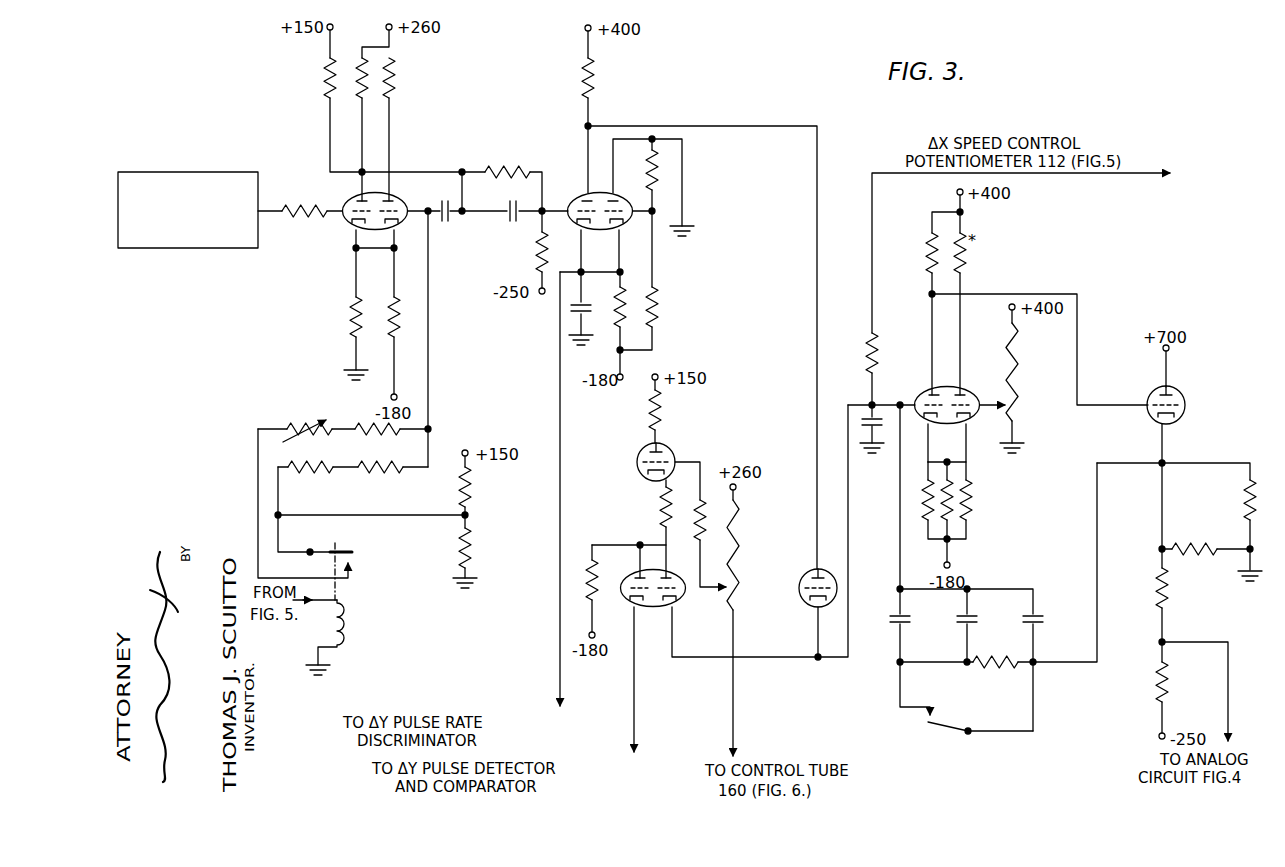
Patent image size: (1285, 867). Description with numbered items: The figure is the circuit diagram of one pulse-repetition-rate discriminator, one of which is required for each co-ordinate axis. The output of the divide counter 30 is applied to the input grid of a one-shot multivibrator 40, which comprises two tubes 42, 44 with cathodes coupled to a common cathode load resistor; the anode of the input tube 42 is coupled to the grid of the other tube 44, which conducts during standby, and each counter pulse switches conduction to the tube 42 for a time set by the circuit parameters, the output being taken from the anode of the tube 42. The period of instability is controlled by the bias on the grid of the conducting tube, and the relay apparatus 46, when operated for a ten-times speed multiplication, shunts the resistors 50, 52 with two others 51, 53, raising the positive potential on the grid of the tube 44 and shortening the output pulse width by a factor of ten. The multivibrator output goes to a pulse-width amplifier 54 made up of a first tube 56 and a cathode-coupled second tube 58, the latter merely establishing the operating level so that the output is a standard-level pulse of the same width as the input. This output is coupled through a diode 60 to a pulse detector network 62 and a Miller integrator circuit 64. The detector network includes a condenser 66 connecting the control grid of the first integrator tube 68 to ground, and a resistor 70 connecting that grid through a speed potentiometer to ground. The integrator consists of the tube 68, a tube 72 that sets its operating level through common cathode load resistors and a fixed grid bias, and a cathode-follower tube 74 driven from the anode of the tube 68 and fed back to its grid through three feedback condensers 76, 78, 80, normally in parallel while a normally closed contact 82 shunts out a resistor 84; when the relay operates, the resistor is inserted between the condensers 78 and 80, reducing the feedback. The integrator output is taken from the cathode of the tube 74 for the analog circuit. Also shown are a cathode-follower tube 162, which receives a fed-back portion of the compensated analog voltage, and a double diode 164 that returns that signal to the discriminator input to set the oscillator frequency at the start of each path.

The divide counter 30 is at (183, 242).
The one-shot multivibrator 40 is at (345, 228).
The input tube of the multivibrator 42 is at (352, 196).
The second tube of the multivibrator 44 is at (405, 207).
The relay apparatus 46 is at (345, 628).
The resistor 50 is at (305, 466).
The resistor 51 is at (298, 420).
The resistor 52 is at (377, 466).
The resistor 53 is at (362, 428).
The pulse-width amplifier 54 is at (571, 194).
The first tube of the pulse-width amplifier 56 is at (574, 228).
The second tube of the pulse-width amplifier 58 is at (628, 226).
The diode 60 is at (806, 601).
The pulse detector network 62 is at (863, 411).
The Miller integrator circuit 64 is at (922, 384).
The condenser 66 is at (868, 430).
The first tube of the Miller integrator 68 is at (917, 398).
The resistor 70 is at (869, 349).
The tube 72 is at (967, 393).
The cathode-follower tube 74 is at (1180, 395).
The feedback condenser 76 is at (893, 626).
The feedback condenser 78 is at (960, 626).
The feedback condenser 80 is at (1040, 619).
The normally closed contact 82 is at (957, 735).
The resistor 84 is at (1002, 670).
The cathode-follower tube 162 is at (637, 463).
The double diode 164 is at (654, 606).